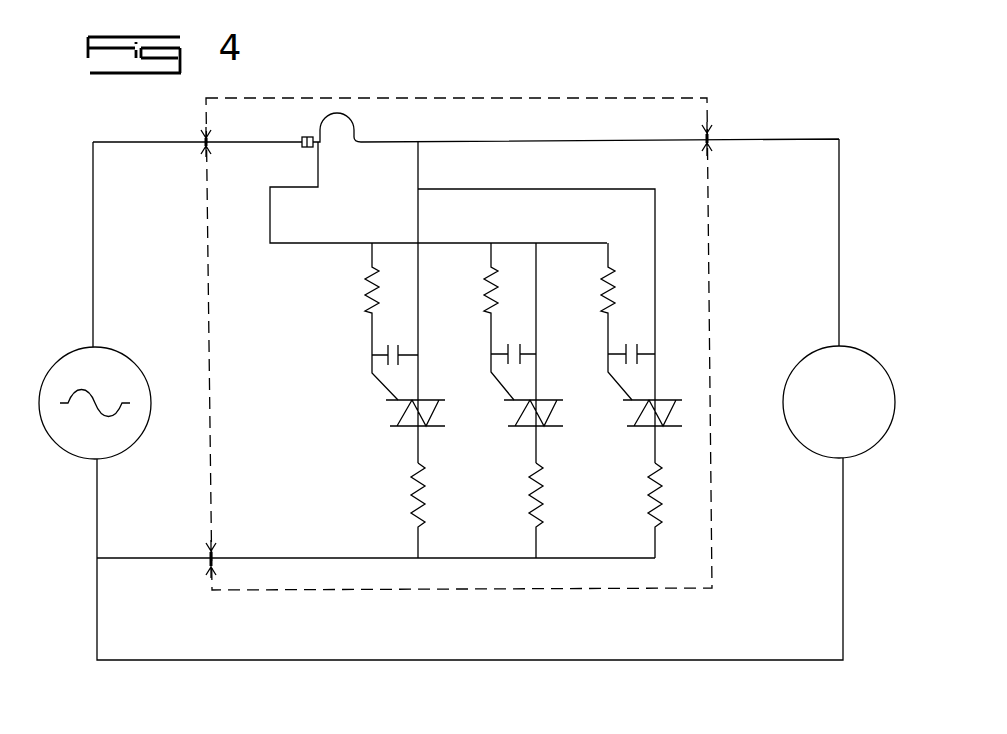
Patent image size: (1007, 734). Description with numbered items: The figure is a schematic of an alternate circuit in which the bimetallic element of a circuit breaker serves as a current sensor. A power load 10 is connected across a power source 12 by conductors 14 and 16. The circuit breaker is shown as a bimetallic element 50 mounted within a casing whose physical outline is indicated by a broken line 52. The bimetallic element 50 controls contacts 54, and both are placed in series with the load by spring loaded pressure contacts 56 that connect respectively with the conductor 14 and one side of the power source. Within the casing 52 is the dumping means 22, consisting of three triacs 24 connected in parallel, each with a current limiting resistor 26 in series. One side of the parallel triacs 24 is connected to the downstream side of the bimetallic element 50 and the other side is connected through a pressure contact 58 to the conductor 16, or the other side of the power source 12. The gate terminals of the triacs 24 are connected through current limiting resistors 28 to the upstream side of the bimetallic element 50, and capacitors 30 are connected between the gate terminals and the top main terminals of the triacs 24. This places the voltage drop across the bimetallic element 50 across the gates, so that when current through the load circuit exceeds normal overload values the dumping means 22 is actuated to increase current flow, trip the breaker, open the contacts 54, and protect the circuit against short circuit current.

The power load 10 is at (865, 456).
The power source 12 is at (130, 452).
The conductor 14 is at (768, 139).
The conductor 16 is at (703, 661).
The dumping means 22 is at (313, 396).
The triac 24 is at (400, 430).
The current limiting resistor 26 is at (417, 506).
The current limiting resistor 28 is at (368, 308).
The capacitor 30 is at (400, 350).
The bimetallic element 50 is at (320, 128).
The casing 52 is at (676, 96).
The contacts 54 is at (302, 145).
The pressure contact 56 is at (202, 146).
The pressure contact 58 is at (208, 554).